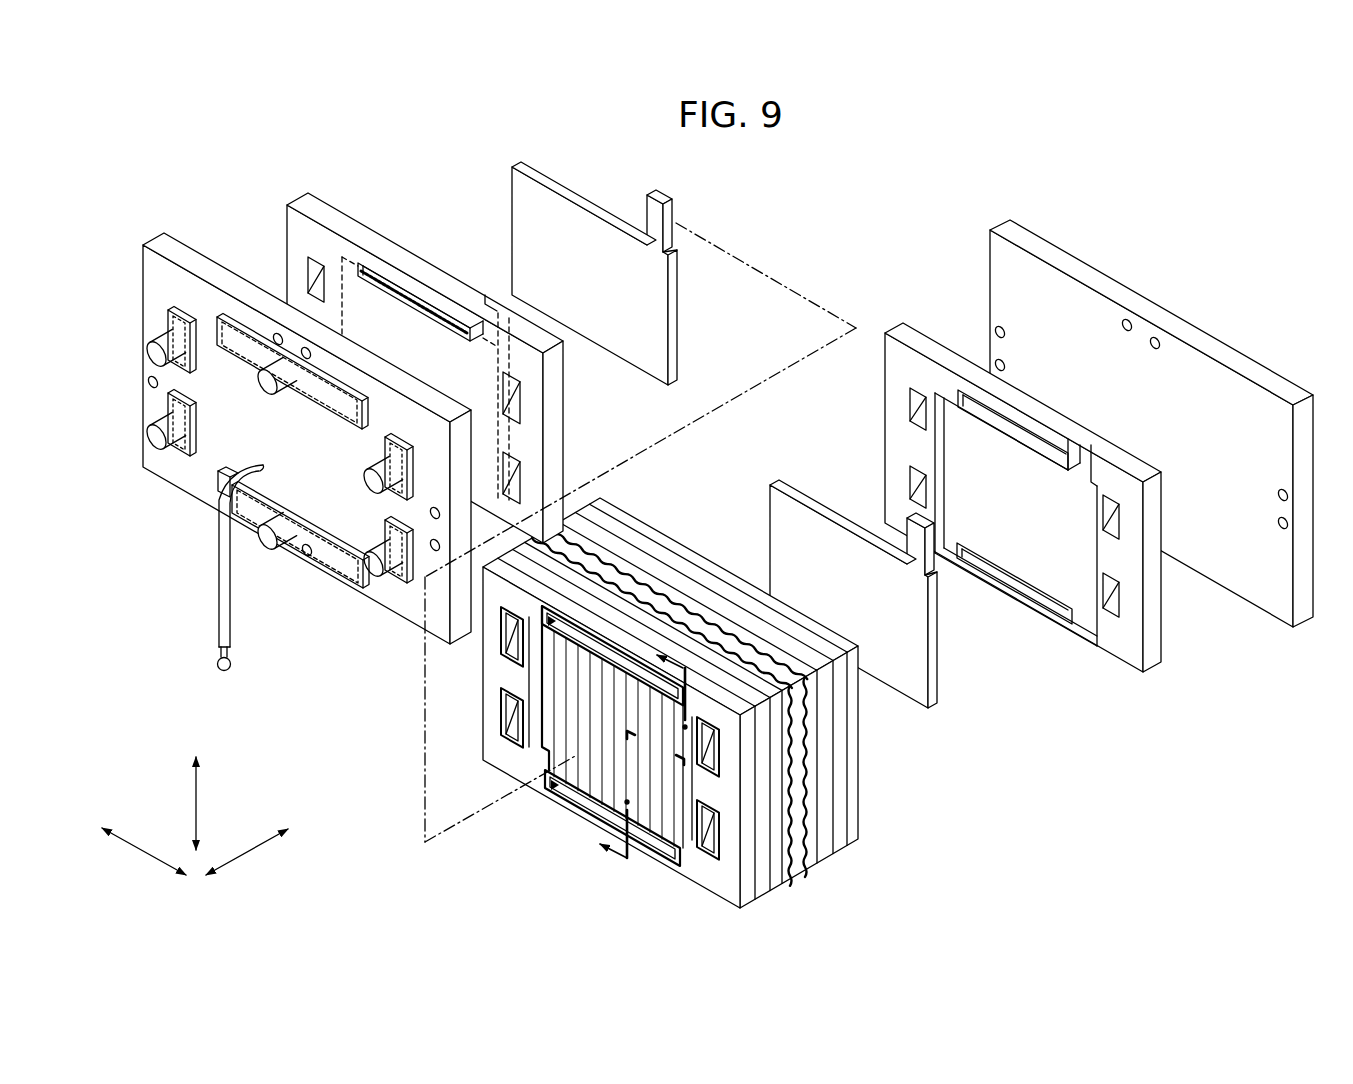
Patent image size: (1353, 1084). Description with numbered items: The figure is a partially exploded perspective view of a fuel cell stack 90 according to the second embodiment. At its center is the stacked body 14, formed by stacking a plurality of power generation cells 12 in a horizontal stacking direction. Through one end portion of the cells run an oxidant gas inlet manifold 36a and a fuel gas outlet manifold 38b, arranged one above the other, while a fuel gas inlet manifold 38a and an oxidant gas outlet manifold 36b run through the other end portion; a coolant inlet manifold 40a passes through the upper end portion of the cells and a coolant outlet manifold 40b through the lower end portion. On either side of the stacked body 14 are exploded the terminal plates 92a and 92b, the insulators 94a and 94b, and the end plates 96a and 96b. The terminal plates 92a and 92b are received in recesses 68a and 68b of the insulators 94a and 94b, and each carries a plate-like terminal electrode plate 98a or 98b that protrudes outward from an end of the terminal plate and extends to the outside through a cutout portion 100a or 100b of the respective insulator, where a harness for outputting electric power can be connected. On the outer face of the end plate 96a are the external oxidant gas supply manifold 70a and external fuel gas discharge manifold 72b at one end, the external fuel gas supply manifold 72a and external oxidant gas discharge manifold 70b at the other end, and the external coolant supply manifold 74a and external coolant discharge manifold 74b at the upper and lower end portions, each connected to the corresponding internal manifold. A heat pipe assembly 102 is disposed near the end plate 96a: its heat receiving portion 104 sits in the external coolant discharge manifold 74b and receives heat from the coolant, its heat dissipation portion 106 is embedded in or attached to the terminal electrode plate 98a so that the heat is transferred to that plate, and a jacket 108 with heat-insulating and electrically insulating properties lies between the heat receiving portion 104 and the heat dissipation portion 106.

The fuel cell stack 90 is at (827, 162).
The power generation cell 12 is at (843, 851).
The stacked body 14 is at (693, 704).
The oxidant gas inlet manifold 36a is at (515, 646).
The oxidant gas outlet manifold 36b is at (707, 848).
The fuel gas inlet manifold 38a is at (708, 747).
The fuel gas outlet manifold 38b is at (512, 711).
The coolant inlet manifold 40a is at (613, 661).
The coolant outlet manifold 40b is at (594, 800).
The recess 68a is at (503, 428).
The recess 68b is at (1050, 586).
The external oxidant gas supply manifold 70a is at (163, 343).
The external oxidant gas discharge manifold 70b is at (376, 569).
The external fuel gas supply manifold 72a is at (376, 470).
The external fuel gas discharge manifold 72b is at (155, 447).
The external coolant supply manifold 74a is at (263, 386).
The external coolant discharge manifold 74b is at (282, 546).
The terminal plate 92a is at (554, 273).
The terminal plate 92b is at (816, 591).
The insulator 94a is at (423, 368).
The insulator 94b is at (1023, 470).
The end plate 96a is at (305, 415).
The end plate 96b is at (1056, 241).
The terminal electrode plate 98a is at (649, 216).
The terminal electrode plate 98b is at (910, 545).
The cutout portion 100a is at (496, 306).
The cutout portion 100b is at (1086, 446).
The heat pipe assembly 102 is at (210, 566).
The heat receiving portion 104 is at (226, 672).
The heat dissipation portion 106 is at (257, 467).
The jacket 108 is at (218, 543).